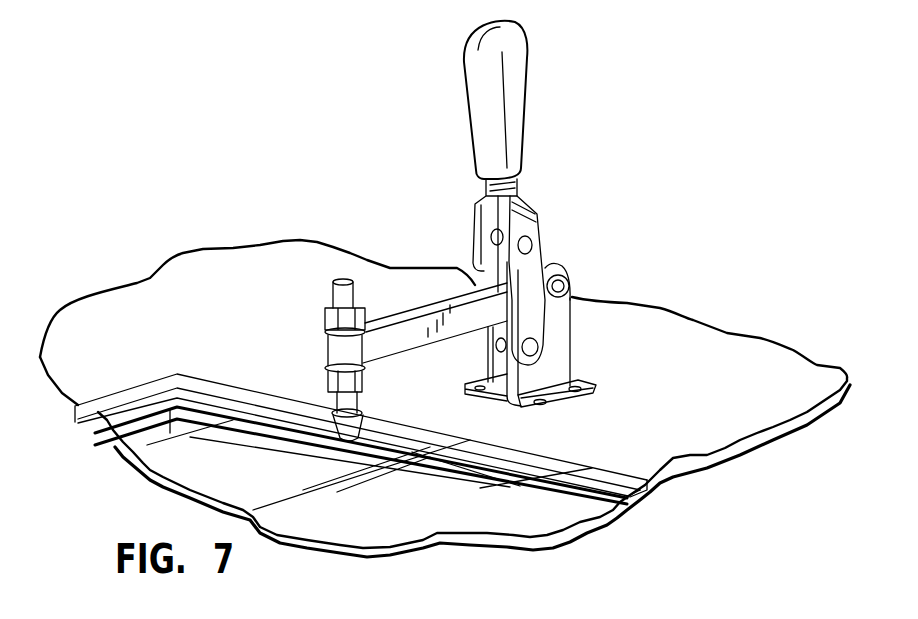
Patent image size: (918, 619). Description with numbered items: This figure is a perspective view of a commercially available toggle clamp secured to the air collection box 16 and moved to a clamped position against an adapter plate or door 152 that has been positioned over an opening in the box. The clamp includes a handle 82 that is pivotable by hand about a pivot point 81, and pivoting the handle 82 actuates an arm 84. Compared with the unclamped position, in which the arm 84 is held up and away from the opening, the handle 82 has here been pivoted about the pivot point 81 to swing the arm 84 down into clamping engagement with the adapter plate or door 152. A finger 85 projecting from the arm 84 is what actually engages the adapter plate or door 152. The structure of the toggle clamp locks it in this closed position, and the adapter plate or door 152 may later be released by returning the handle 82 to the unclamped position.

The air collection box 16 is at (650, 452).
The adapter plate or door 152 is at (138, 387).
The pivot point 81 is at (572, 358).
The handle 82 is at (528, 72).
The arm 84 is at (407, 300).
The finger 85 is at (345, 441).